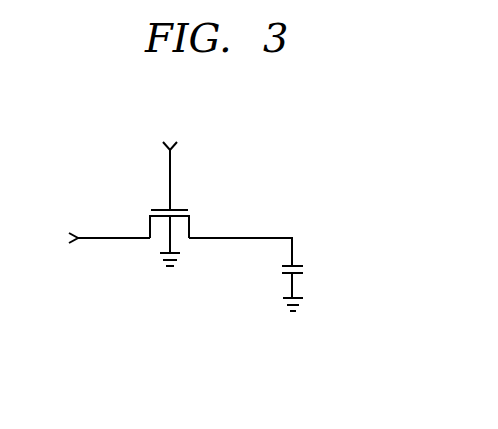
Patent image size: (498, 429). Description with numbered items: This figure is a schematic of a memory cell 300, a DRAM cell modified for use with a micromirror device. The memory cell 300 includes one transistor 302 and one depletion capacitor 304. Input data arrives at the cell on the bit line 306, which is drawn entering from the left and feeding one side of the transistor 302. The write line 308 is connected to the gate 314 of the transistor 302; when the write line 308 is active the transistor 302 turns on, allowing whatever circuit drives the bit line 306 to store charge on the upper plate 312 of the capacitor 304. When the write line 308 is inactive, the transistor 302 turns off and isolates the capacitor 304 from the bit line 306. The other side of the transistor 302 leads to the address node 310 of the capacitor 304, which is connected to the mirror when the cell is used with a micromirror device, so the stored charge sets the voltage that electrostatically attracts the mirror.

The memory cell 300 is at (274, 128).
The transistor 302 is at (150, 253).
The depletion capacitor 304 is at (270, 277).
The bit line 306 is at (108, 237).
The write line 308 is at (168, 140).
The address node 310 is at (245, 238).
The upper plate 312 is at (303, 273).
The gate 314 is at (177, 209).